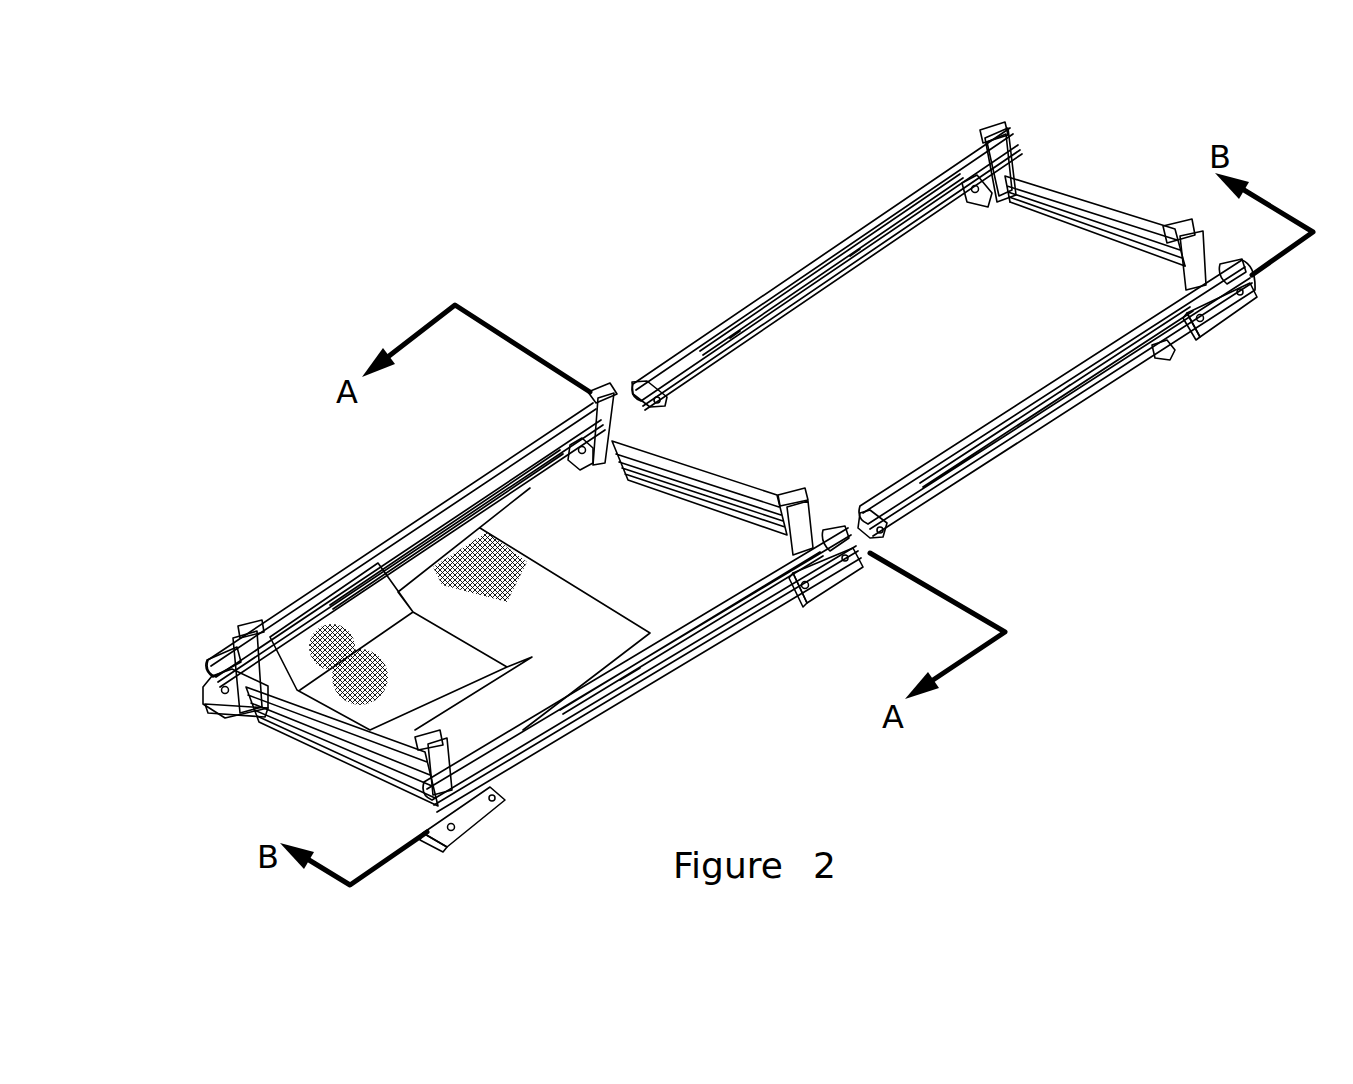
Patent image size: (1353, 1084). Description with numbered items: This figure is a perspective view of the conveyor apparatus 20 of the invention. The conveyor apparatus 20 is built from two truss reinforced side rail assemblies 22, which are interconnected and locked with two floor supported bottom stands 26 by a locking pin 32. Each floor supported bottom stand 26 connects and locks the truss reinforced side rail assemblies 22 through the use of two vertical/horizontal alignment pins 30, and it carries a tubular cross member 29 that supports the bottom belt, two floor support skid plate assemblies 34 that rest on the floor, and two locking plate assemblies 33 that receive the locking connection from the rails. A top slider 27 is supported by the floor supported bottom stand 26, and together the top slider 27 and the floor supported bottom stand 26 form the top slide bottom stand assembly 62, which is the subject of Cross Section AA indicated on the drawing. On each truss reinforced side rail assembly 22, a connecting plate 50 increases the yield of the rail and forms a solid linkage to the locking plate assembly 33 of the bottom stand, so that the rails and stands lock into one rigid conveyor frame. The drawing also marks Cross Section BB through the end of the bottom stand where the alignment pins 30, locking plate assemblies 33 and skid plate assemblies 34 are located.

The conveyor apparatus 20 is at (510, 277).
The truss reinforced side rail assembly 22 is at (440, 505).
The floor supported bottom stand 26 is at (683, 540).
The top slider 27 is at (710, 470).
The tubular cross member 29 is at (1103, 205).
The vertical/horizontal alignment pin 30 is at (205, 663).
The locking pin 32 is at (978, 195).
The locking plate assembly 33 is at (195, 690).
The floor support skid plate assembly 34 is at (417, 827).
The connecting plate 50 is at (562, 462).
The top slide bottom stand assembly 62 is at (1112, 145).